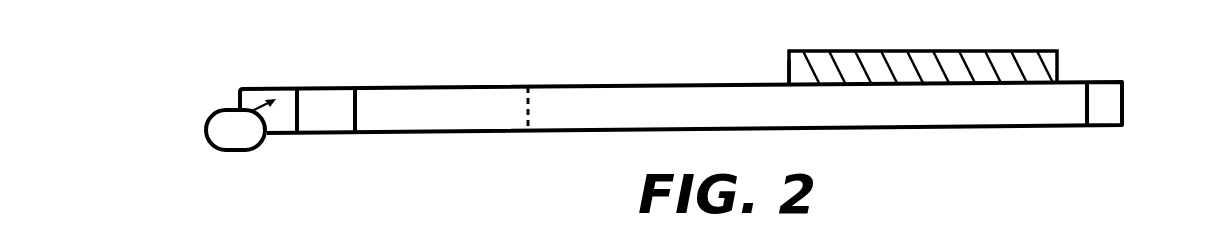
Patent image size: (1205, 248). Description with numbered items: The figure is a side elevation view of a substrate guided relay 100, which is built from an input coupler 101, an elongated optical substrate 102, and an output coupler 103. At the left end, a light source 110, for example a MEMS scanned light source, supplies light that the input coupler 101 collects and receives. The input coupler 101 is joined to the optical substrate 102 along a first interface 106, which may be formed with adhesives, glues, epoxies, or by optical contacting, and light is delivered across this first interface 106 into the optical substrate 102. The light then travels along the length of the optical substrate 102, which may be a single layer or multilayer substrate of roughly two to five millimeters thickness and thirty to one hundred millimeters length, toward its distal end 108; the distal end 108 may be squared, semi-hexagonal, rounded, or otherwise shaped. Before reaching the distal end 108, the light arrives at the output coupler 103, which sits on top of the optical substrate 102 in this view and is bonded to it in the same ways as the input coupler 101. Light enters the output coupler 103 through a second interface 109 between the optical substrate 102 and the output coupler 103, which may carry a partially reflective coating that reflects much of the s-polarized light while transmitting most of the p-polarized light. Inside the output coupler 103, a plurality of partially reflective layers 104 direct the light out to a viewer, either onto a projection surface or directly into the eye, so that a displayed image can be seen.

The substrate guided relay 100 is at (230, 91).
The input coupler 101 is at (313, 107).
The optical substrate 102 is at (662, 108).
The output coupler 103 is at (835, 51).
The partially reflective layers 104 is at (947, 57).
The first interface 106 is at (357, 107).
The distal end 108 is at (1123, 97).
The second interface 109 is at (789, 80).
The light source 110 is at (238, 128).